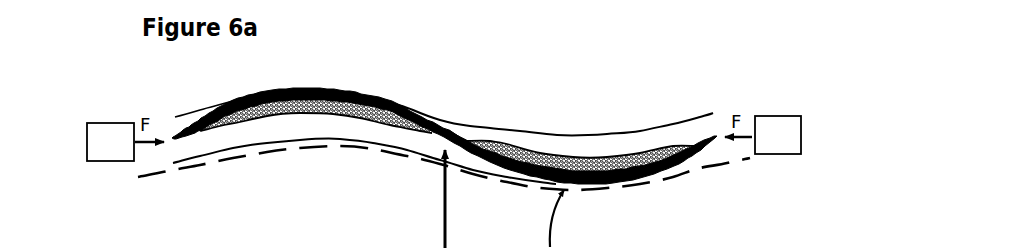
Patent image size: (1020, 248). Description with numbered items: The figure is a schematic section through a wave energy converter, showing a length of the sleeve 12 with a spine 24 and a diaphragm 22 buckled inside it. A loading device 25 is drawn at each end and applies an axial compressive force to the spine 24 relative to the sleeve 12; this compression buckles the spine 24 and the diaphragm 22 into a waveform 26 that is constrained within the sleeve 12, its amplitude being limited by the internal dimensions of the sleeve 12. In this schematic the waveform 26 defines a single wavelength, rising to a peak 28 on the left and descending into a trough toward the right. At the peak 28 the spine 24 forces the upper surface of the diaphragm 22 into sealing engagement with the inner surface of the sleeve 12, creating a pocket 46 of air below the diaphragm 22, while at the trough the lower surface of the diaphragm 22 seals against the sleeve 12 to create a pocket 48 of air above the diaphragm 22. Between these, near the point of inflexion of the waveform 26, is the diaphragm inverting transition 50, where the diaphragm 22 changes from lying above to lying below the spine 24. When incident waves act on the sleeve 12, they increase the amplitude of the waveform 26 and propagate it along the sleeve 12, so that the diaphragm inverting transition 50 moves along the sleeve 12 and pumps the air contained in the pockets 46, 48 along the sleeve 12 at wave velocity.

The sleeve 12 is at (444, 133).
The diaphragm 22 is at (234, 128).
The spine 24 is at (275, 92).
The loading device 25 is at (98, 145).
The waveform 26 is at (462, 129).
The peak 28 is at (335, 90).
The pocket of air below the diaphragm 46 is at (352, 140).
The pocket of air above the diaphragm 48 is at (571, 148).
The diaphragm inverting transition 50 is at (469, 137).